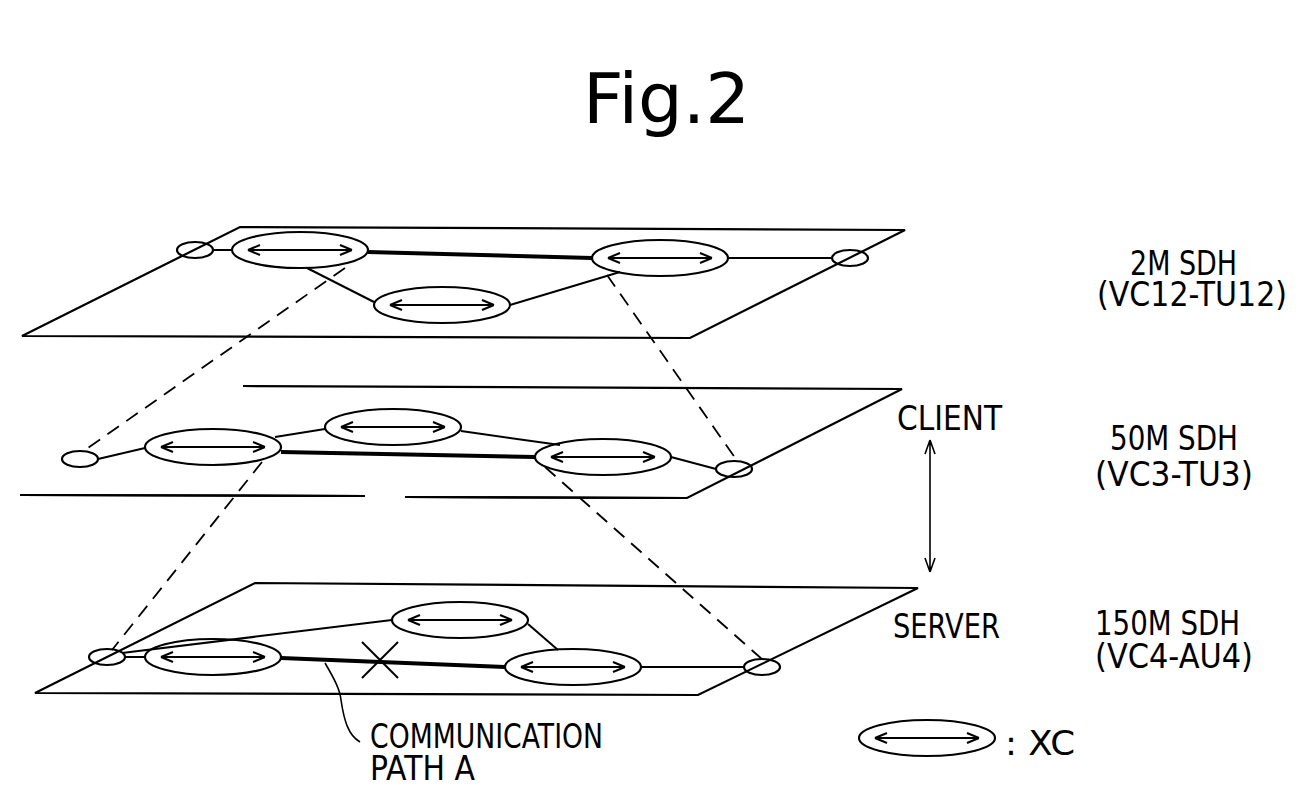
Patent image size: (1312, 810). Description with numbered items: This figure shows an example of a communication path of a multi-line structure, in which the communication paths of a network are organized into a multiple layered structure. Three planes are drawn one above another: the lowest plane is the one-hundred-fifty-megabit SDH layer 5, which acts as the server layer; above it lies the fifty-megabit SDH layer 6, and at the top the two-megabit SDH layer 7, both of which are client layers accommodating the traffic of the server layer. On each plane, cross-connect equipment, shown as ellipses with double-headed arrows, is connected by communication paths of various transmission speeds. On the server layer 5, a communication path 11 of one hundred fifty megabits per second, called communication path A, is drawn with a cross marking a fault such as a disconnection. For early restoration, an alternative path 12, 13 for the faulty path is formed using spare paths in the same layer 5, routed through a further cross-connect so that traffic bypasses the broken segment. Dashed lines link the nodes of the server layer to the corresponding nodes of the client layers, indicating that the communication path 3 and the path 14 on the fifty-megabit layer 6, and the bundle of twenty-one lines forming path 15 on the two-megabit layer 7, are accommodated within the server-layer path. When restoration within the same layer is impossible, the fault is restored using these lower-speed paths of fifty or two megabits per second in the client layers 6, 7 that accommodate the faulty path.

The communication path 3 is at (353, 503).
The 150M_SDH layer 5 is at (828, 588).
The 50M_SDH layer 6 is at (825, 389).
The 2M_SDH layer 7 is at (827, 228).
The communication path 11 is at (293, 663).
The alternative path 12 is at (322, 623).
The alternative path 13 is at (547, 641).
The communication path 14 is at (305, 457).
The communication path 15 is at (548, 255).